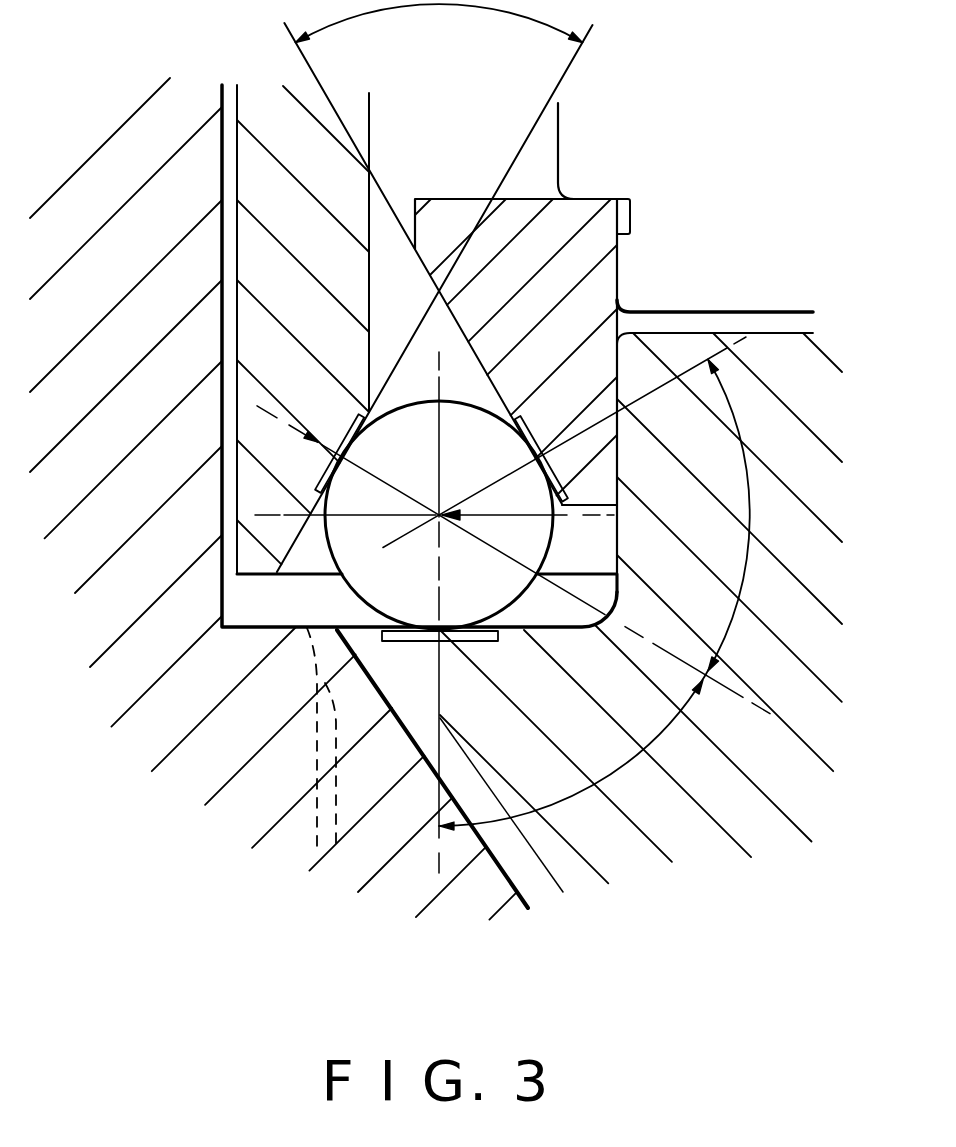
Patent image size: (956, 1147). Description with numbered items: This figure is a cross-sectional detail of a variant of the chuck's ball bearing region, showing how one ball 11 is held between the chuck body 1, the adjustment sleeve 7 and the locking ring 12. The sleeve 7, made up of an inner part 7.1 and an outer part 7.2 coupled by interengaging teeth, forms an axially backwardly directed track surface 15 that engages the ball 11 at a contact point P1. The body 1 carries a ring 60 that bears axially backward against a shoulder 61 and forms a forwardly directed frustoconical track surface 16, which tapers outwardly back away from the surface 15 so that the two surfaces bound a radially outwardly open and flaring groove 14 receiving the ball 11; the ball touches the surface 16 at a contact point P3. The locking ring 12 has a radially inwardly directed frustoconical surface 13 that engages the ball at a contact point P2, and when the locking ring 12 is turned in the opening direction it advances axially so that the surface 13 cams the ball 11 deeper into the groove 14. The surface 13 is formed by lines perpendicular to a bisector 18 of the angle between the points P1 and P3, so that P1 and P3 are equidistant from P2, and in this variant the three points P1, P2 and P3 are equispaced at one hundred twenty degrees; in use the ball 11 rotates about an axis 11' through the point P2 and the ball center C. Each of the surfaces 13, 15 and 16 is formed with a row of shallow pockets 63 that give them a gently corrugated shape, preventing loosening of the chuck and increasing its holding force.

The chuck body 1 is at (783, 260).
The adjustment sleeve 7 is at (192, 697).
The inner part of the sleeve 7.1 is at (743, 742).
The outer part of the sleeve 7.2 is at (288, 755).
The ball 11 is at (419, 356).
The ball rotation axis 11' is at (360, 534).
The locking ring 12 is at (268, 117).
The outer track surface 13 is at (292, 533).
The groove 14 is at (577, 541).
The track surface of the sleeve 15 is at (518, 633).
The track surface of the ring 16 is at (465, 338).
The bisector 18 is at (577, 597).
The ring 60 is at (453, 217).
The shoulder 61 is at (594, 199).
The shallow pockets 63 is at (346, 440).
The ball center point C is at (433, 523).
The contact point with sleeve surface P1 is at (411, 597).
The contact point with locking-ring surface P2 is at (382, 450).
The contact point with ring surface P3 is at (519, 496).